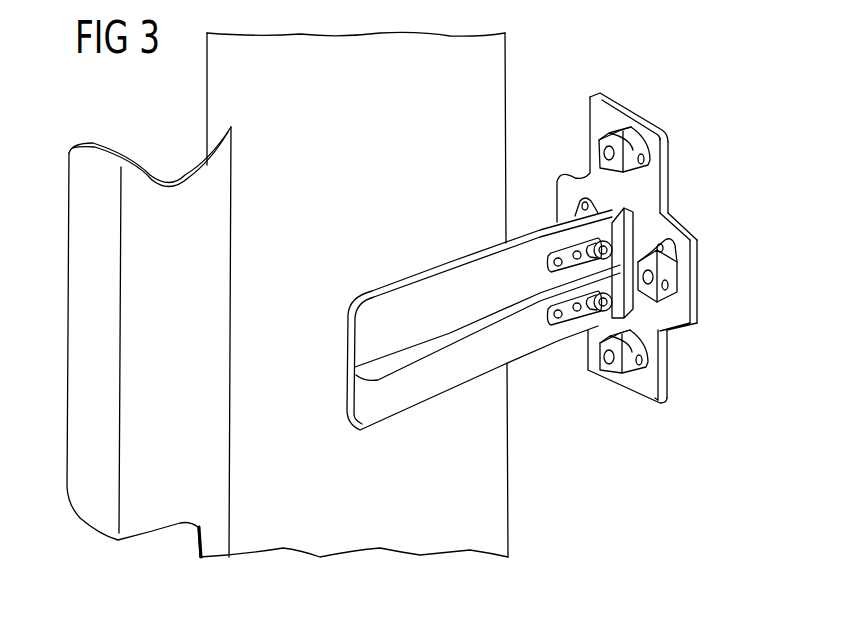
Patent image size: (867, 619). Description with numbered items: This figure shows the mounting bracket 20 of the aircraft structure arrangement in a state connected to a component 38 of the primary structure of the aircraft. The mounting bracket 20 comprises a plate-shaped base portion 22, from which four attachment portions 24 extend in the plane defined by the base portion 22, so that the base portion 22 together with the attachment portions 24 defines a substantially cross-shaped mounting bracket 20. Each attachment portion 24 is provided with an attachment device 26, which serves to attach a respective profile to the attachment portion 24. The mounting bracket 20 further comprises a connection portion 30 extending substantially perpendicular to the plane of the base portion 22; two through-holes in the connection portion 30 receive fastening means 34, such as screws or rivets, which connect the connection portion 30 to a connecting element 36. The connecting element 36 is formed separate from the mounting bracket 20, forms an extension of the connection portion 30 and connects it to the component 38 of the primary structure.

The mounting bracket 20 is at (641, 250).
The base portion 22 is at (657, 155).
The attachment portion 24 is at (620, 122).
The attachment device 26 is at (600, 150).
The connection portion 30 is at (215, 100).
The fastening means 34 is at (577, 322).
The connecting element 36 is at (475, 283).
The component of the primary structure 38 is at (490, 495).